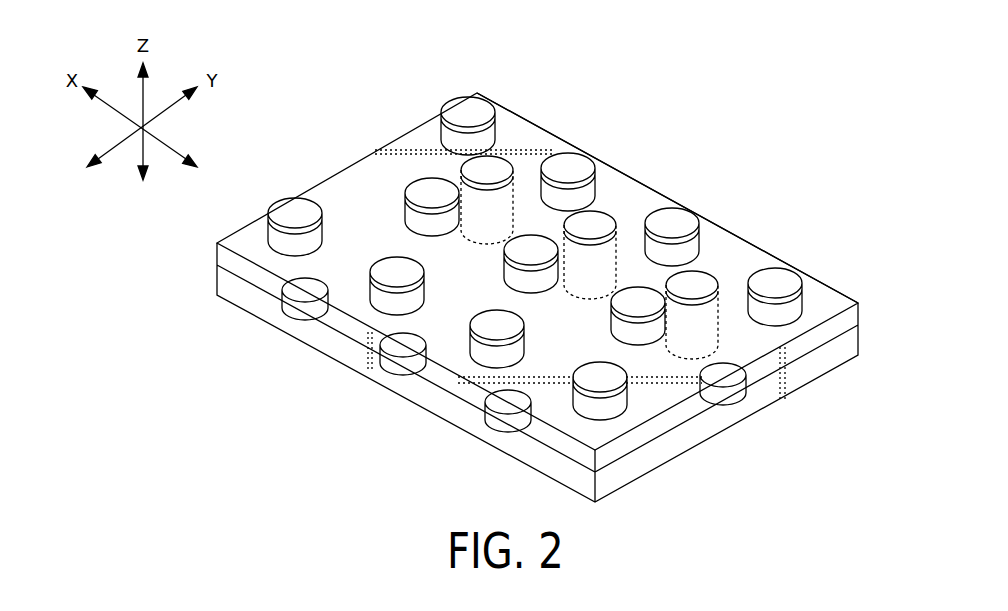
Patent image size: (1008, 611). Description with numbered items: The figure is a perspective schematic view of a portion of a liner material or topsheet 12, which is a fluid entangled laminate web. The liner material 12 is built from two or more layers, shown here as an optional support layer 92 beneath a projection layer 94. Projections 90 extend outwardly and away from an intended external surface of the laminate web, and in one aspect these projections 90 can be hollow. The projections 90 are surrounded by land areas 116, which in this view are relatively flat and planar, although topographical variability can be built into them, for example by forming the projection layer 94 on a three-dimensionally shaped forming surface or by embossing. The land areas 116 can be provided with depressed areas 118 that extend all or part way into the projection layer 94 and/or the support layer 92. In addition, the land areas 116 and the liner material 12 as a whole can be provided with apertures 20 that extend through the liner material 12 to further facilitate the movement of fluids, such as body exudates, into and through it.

The liner material or topsheet 12 is at (709, 100).
The apertures 20 is at (507, 157).
The projections 90 is at (468, 100).
The support layer 92 is at (240, 298).
The projection layer 94 is at (358, 186).
The land areas 116 is at (735, 247).
The depressed areas 118 is at (295, 320).